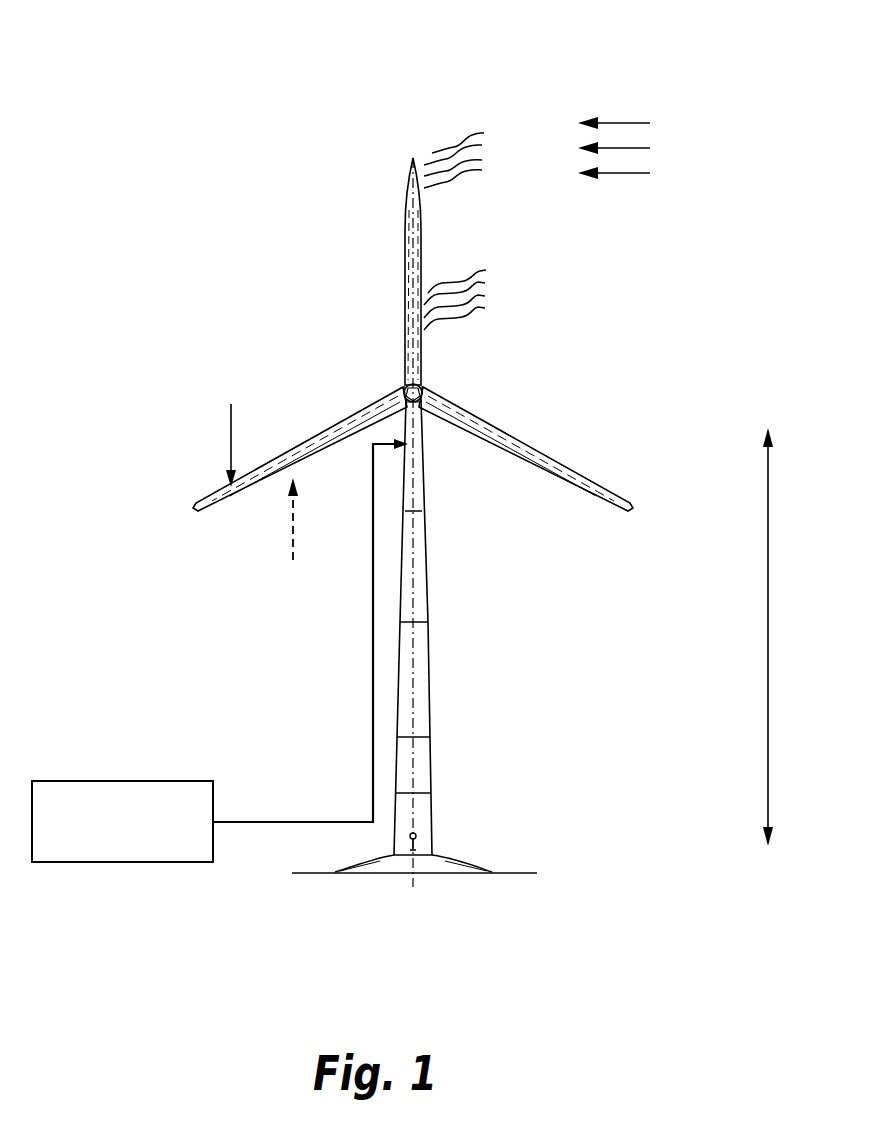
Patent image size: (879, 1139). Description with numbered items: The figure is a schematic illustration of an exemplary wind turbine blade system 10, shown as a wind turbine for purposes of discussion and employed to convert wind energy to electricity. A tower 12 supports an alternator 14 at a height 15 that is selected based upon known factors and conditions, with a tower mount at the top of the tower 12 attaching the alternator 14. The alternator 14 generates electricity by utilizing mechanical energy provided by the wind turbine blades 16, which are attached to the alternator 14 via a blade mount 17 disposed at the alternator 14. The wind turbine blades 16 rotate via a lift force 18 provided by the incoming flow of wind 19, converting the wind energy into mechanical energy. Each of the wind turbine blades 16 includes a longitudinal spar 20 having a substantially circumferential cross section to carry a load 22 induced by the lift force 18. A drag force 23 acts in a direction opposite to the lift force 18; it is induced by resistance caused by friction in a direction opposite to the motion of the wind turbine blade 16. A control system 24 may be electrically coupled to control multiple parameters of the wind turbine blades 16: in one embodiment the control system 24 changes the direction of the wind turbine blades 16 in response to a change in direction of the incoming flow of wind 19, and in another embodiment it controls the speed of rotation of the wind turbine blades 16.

The wind turbine blade system 10 is at (188, 60).
The tower 12 is at (428, 657).
The alternator 14 is at (424, 389).
The height 15 is at (767, 680).
The wind turbine blades 16 is at (583, 472).
The blade mount 17 is at (403, 390).
The lift force 18 is at (441, 152).
The incoming flow of wind 19 is at (616, 122).
The longitudinal spar 20 is at (314, 449).
The load 22 is at (231, 444).
The drag force 23 is at (290, 539).
The control system 24 is at (100, 781).